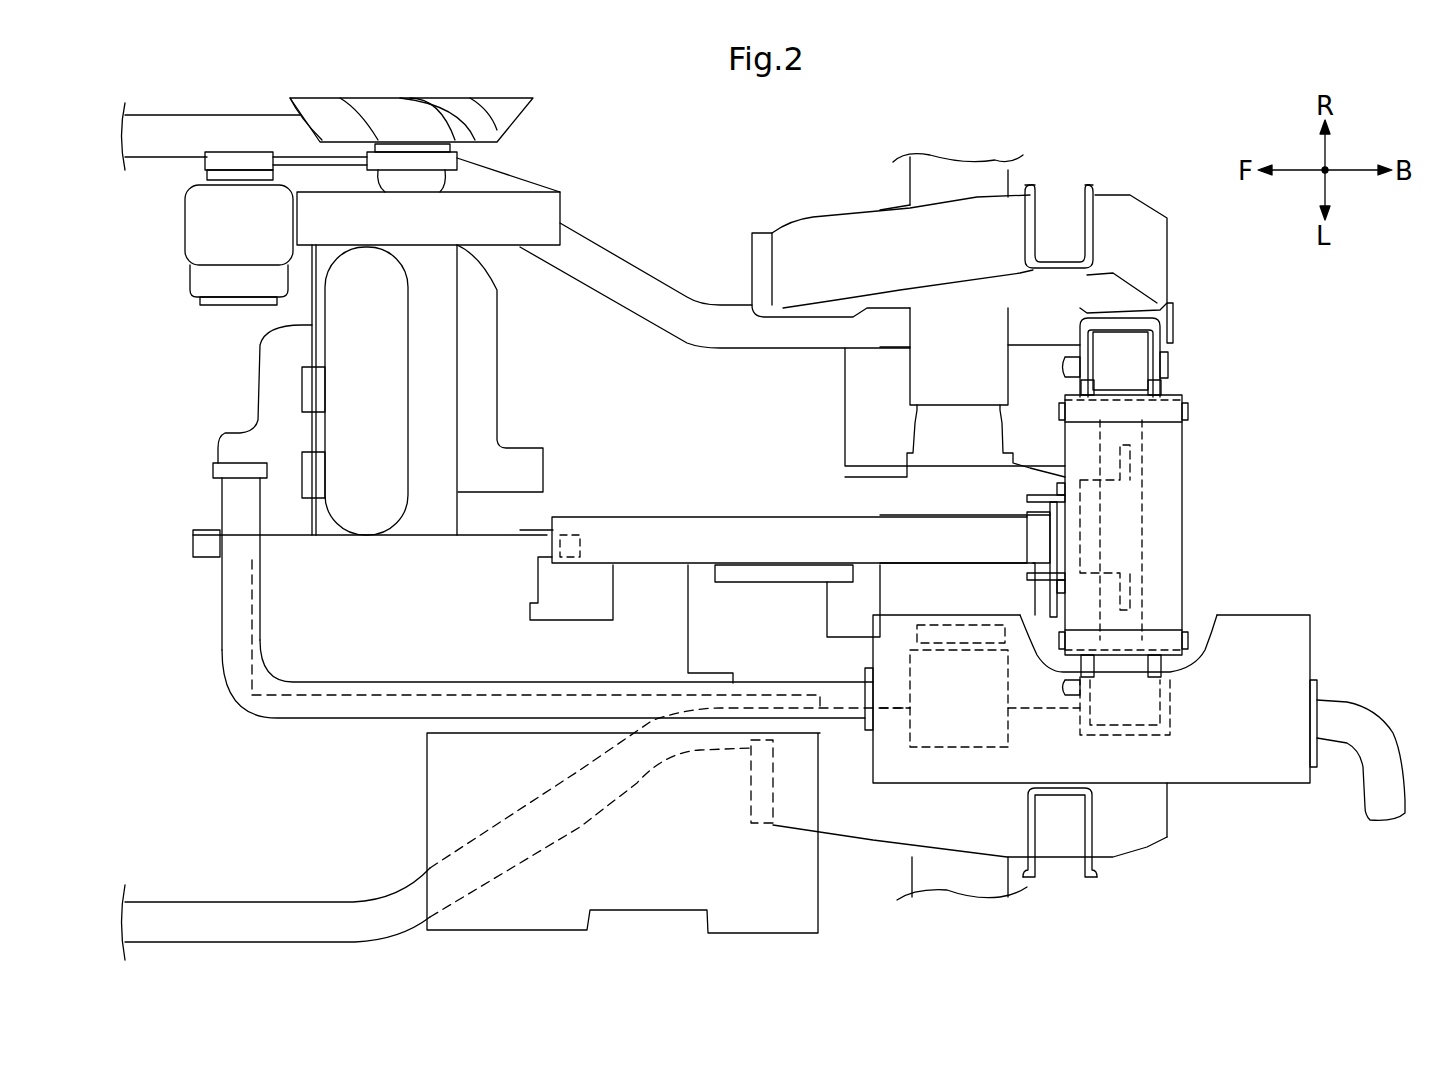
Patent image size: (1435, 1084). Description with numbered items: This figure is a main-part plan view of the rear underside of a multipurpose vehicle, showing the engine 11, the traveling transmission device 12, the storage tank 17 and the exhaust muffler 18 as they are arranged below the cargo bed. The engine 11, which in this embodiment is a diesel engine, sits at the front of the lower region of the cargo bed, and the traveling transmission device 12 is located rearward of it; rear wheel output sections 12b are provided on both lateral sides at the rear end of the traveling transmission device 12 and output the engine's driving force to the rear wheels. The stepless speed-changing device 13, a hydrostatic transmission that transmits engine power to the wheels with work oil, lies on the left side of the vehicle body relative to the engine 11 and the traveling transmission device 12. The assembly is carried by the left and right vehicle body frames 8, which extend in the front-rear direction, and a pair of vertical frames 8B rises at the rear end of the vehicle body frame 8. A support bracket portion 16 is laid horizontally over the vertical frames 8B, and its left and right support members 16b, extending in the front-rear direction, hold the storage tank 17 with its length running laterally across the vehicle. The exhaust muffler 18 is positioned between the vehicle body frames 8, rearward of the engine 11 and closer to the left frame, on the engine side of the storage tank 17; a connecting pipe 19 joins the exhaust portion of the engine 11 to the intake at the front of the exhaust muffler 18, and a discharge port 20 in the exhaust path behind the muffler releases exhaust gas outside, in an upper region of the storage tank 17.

The vehicle body frame 8 is at (613, 275).
The vertical frame 8B is at (1123, 230).
The engine 11 is at (367, 393).
The traveling transmission device 12 is at (865, 493).
The rear wheel output section 12b is at (953, 337).
The stepless speed-changing device 13 is at (457, 797).
The support bracket portion 16 is at (1143, 470).
The support member 16b is at (1187, 413).
The storage tank 17 is at (1160, 545).
The exhaust muffler 18 is at (1237, 760).
The connecting pipe 19 is at (390, 682).
The discharge port 20 is at (1383, 802).